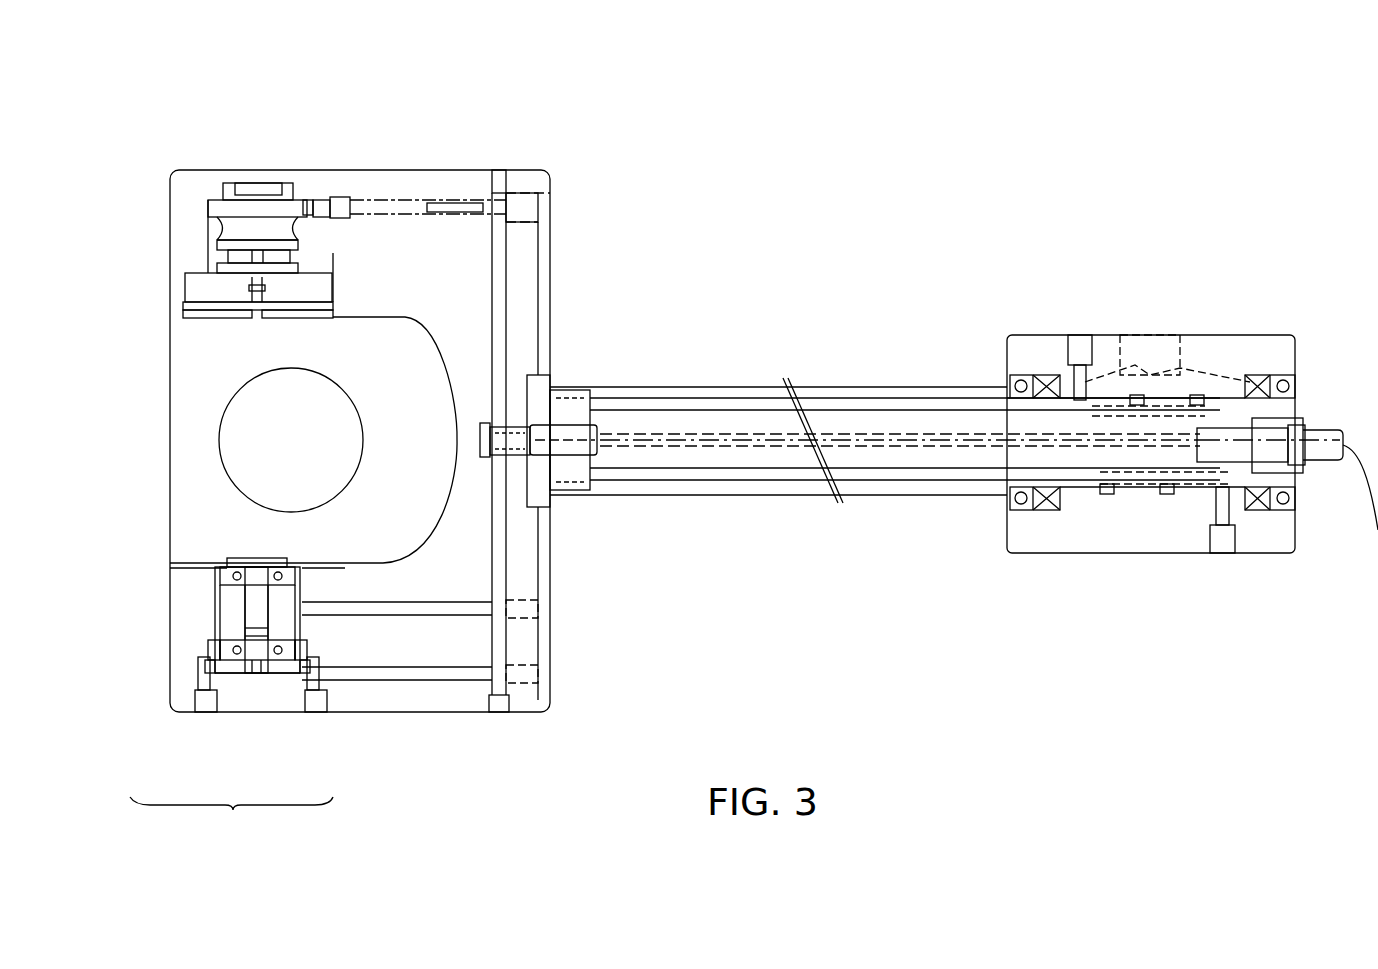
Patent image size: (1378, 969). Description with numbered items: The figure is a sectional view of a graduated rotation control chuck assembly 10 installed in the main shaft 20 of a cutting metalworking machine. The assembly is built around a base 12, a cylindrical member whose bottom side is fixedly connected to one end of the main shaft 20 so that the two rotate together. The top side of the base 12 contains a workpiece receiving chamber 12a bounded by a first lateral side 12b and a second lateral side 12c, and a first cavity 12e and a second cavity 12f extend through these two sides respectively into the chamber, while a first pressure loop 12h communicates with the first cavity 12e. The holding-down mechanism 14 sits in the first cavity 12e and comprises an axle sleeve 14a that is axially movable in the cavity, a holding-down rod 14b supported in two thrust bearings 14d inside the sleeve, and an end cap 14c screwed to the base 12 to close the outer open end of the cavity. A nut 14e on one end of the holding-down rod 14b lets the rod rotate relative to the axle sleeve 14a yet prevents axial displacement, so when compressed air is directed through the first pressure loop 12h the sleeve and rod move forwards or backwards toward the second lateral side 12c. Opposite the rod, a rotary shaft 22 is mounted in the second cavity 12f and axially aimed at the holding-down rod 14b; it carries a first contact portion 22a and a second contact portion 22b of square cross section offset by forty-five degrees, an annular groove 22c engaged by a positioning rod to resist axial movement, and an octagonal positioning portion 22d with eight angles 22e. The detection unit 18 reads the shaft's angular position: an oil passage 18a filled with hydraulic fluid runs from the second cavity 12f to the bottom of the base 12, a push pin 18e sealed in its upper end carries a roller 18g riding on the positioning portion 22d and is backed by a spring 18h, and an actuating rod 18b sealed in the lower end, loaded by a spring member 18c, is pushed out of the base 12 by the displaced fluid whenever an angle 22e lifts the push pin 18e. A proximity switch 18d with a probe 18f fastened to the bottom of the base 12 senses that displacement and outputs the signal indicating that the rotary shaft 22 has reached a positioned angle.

The graduated rotation control chuck assembly 10 is at (650, 138).
The base 12 is at (545, 697).
The workpiece receiving chamber 12a is at (180, 442).
The first lateral side 12b is at (370, 560).
The second lateral side 12c is at (380, 318).
The first cavity 12e is at (213, 583).
The second cavity 12f is at (317, 253).
The first pressure loop 12h is at (447, 608).
The holding-down mechanism 14 is at (231, 750).
The axle sleeve 14a is at (215, 607).
The holding-down rod 14b is at (253, 650).
The end cap 14c is at (258, 613).
The thrust bearing 14d is at (273, 660).
The nut 14e is at (235, 665).
The detection unit 18 is at (757, 295).
The oil passage 18a is at (500, 272).
The actuating rod 18b is at (575, 430).
The spring member 18c is at (510, 427).
The proximity switch 18d is at (1318, 432).
The push pin 18e is at (403, 213).
The probe 18f is at (583, 445).
The roller 18g is at (297, 205).
The spring 18h is at (462, 203).
The main shaft 20 is at (972, 510).
The rotary shaft 22 is at (97, 302).
The first contact portion 22a is at (222, 245).
The second contact portion 22b is at (233, 253).
The annular groove 22c is at (232, 227).
The positioning portion 22d is at (227, 208).
The angles 22e is at (218, 202).